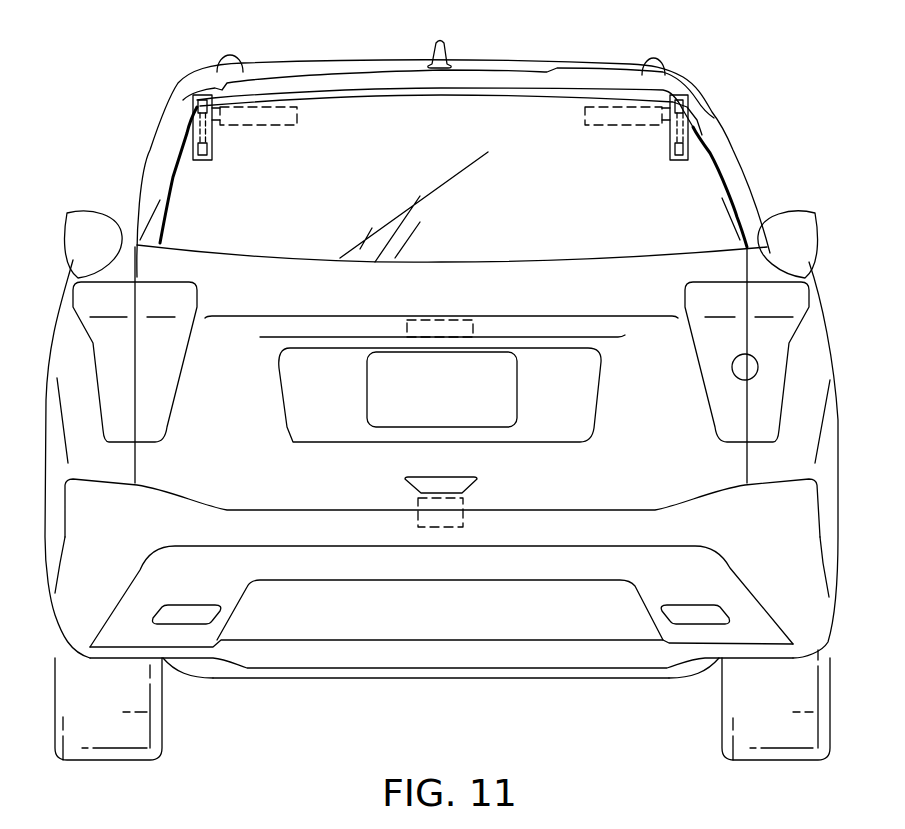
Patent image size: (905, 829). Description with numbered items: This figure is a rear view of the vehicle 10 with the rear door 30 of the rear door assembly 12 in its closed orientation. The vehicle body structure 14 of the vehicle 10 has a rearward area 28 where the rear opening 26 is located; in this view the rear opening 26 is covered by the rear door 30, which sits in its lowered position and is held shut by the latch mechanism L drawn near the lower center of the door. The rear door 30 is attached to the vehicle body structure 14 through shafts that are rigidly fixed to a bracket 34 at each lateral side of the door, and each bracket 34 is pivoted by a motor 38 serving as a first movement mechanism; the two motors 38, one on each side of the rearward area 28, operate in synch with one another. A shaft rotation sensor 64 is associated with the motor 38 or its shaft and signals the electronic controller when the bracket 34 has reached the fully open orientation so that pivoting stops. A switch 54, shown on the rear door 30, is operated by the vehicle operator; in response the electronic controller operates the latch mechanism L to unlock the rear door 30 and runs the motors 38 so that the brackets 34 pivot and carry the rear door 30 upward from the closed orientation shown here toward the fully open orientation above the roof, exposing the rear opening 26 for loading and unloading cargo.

The vehicle 10 is at (187, 40).
The rear door assembly 12 is at (722, 169).
The vehicle body structure 14 is at (681, 72).
The rear opening 26 is at (752, 383).
The rearward area 28 is at (575, 72).
The rear door 30 is at (713, 267).
The bracket 34 is at (217, 148).
The motor 38 is at (260, 126).
The switch 54 is at (428, 318).
The shaft rotation sensor 64 is at (200, 115).
The latch mechanism L is at (465, 522).